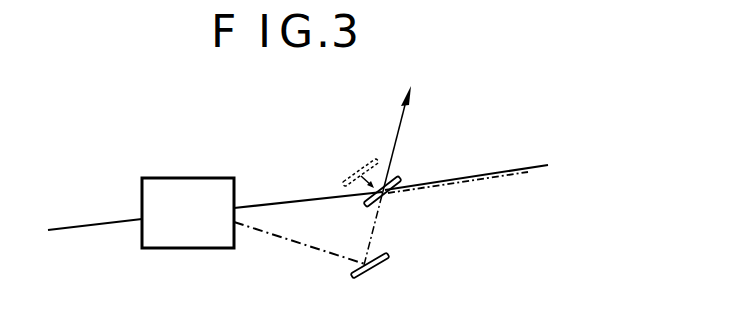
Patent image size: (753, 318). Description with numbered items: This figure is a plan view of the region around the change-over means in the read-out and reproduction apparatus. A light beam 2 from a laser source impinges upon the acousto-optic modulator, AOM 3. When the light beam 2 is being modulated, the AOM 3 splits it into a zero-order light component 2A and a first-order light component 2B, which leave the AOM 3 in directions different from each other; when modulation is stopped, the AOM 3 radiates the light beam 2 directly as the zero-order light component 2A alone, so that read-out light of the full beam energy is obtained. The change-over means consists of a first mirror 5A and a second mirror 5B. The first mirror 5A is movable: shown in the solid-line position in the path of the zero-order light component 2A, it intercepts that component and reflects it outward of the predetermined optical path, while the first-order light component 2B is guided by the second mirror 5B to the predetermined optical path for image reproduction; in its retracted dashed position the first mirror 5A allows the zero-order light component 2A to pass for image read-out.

The light beam 2 is at (83, 226).
The acousto-optic modulator (AOM) 3 is at (185, 178).
The zero-order light component 2A is at (290, 200).
The first-order light component 2B is at (300, 247).
The first mirror 5A is at (348, 178).
The second mirror 5B is at (387, 263).